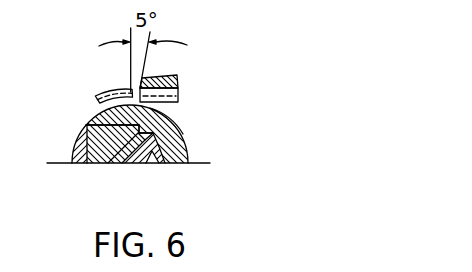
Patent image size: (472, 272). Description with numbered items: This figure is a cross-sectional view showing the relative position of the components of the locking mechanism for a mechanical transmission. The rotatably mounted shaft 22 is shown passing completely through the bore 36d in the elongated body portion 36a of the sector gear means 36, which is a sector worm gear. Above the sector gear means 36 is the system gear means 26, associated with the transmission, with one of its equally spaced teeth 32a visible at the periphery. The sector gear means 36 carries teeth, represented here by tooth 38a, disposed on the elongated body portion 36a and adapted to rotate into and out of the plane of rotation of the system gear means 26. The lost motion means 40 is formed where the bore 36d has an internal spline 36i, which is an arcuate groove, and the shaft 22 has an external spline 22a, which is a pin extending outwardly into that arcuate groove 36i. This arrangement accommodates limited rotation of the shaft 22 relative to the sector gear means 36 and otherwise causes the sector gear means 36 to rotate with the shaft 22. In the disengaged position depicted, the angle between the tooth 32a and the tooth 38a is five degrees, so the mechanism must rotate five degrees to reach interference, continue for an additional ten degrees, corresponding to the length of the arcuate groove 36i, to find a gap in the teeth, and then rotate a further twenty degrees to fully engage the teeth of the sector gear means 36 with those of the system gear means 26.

The rotatably mounted shaft 22 is at (122, 152).
The external spline 22a is at (111, 127).
The system gear means 26 is at (178, 65).
The tooth of system gear means 32a is at (178, 82).
The sector gear means 36 is at (191, 148).
The elongated body portion 36a is at (93, 150).
The bore 36d is at (149, 155).
The internal spline 36i is at (140, 133).
The tooth of sector gear means 38a is at (111, 92).
The lost motion means 40 is at (181, 110).